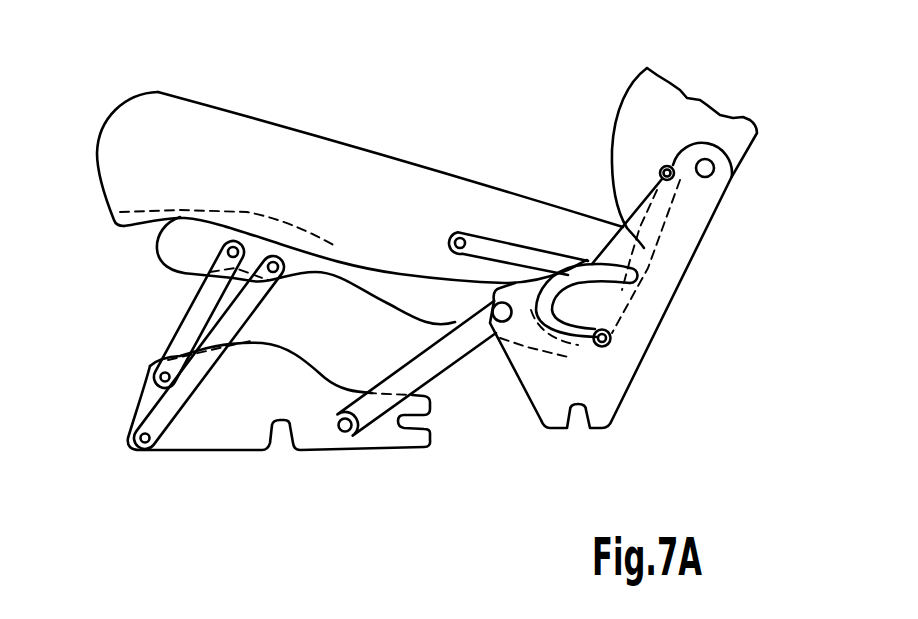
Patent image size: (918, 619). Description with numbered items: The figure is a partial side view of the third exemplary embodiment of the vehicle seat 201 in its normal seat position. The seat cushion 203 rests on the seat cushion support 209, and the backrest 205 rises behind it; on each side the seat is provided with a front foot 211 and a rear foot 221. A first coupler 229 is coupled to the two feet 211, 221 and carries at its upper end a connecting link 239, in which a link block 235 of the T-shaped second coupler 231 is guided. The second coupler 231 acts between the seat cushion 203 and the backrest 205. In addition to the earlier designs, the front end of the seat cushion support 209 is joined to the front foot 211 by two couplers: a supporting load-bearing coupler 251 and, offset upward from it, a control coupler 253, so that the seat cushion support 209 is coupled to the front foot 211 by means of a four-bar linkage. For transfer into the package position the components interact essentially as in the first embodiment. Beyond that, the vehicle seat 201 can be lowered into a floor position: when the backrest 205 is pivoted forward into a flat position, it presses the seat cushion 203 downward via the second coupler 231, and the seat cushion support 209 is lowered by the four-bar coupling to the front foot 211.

The vehicle seat 201 is at (532, 132).
The seat cushion 203 is at (367, 177).
The backrest 205 is at (682, 128).
The seat cushion support 209 is at (183, 242).
The front foot 211 is at (207, 422).
The rear foot 221 is at (643, 308).
The first coupler 229 is at (433, 363).
The second coupler 231 is at (502, 253).
The link block 235 is at (610, 339).
The connecting link 239 is at (580, 343).
The load-bearing coupler 251 is at (227, 332).
The control coupler 253 is at (197, 315).